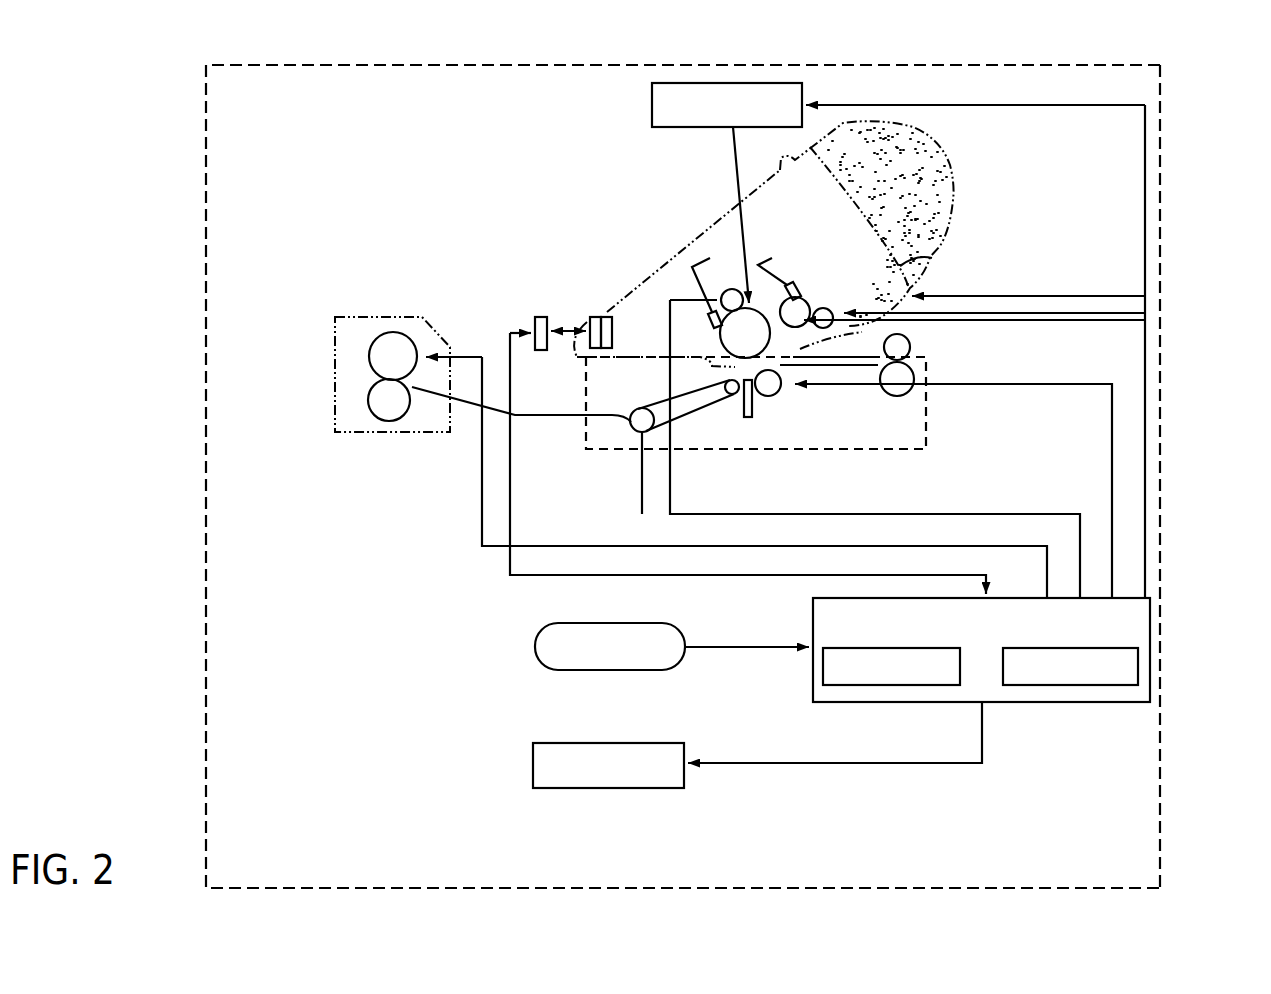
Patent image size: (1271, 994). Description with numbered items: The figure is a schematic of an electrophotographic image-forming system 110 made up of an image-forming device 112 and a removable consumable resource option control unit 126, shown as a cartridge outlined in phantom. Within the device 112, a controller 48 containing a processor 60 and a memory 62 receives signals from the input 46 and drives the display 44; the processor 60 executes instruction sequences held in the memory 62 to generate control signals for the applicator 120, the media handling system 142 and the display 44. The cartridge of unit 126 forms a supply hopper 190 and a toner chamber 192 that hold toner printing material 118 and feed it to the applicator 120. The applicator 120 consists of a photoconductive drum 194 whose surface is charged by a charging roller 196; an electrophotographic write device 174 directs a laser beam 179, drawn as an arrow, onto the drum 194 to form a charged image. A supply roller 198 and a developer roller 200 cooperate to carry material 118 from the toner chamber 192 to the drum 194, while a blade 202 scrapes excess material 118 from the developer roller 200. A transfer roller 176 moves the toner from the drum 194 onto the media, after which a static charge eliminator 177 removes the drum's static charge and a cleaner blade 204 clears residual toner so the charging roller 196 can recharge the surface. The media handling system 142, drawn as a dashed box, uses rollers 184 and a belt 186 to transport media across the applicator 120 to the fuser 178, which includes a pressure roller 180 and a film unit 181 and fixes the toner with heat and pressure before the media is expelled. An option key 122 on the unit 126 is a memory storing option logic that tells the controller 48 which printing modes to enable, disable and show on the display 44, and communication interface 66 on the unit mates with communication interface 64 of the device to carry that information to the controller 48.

The image-forming system 110 is at (602, 476).
The image-forming device 112 is at (1207, 476).
The electrophotographic write device 174 is at (688, 106).
The laser beam 179 is at (704, 215).
The supply hopper 190 is at (890, 223).
The printing material 118 is at (961, 222).
The consumable resource option control unit 126 is at (923, 216).
The toner chamber 192 is at (947, 266).
The applicator 120 is at (719, 268).
The option key 122 is at (582, 294).
The communication interface 64 is at (527, 304).
The communication interface 66 is at (578, 310).
The cleaner blade 204 is at (674, 313).
The charging roller 196 is at (698, 263).
The photoconductive drum 194 is at (694, 349).
The blade 202 is at (779, 257).
The developer roller 200 is at (804, 282).
The supply roller 198 is at (836, 271).
The media handling system 142 is at (806, 403).
The rollers 184 is at (922, 390).
The transfer roller 176 is at (800, 399).
The static charge eliminator 177 is at (773, 414).
The belt 186 is at (686, 414).
The fuser 178 is at (351, 375).
The pressure roller 180 is at (391, 321).
The film unit 181 is at (387, 436).
The controller 48 is at (981, 690).
The processor 60 is at (891, 702).
The memory 62 is at (1070, 702).
The input 46 is at (589, 661).
The display 44 is at (588, 781).